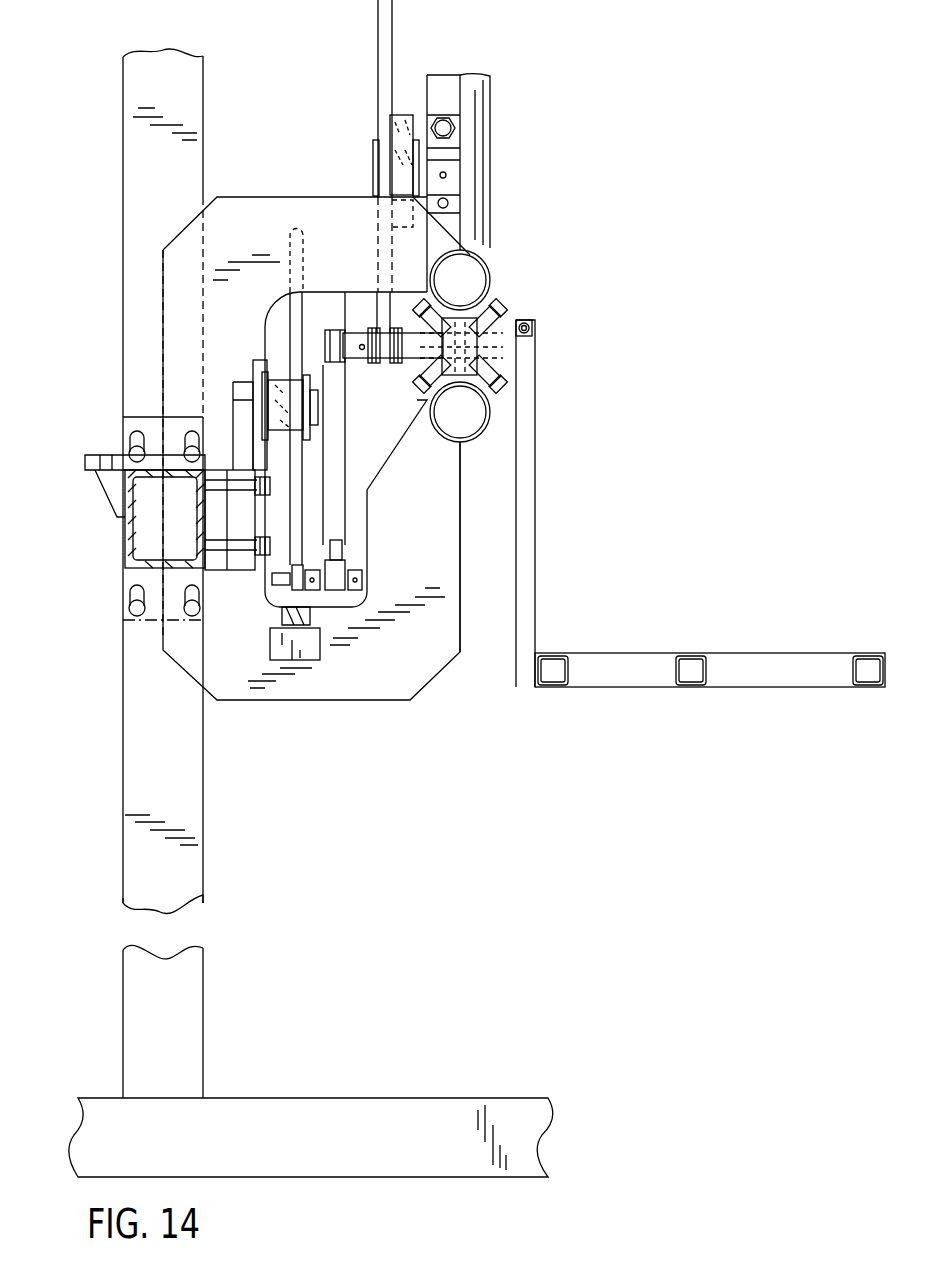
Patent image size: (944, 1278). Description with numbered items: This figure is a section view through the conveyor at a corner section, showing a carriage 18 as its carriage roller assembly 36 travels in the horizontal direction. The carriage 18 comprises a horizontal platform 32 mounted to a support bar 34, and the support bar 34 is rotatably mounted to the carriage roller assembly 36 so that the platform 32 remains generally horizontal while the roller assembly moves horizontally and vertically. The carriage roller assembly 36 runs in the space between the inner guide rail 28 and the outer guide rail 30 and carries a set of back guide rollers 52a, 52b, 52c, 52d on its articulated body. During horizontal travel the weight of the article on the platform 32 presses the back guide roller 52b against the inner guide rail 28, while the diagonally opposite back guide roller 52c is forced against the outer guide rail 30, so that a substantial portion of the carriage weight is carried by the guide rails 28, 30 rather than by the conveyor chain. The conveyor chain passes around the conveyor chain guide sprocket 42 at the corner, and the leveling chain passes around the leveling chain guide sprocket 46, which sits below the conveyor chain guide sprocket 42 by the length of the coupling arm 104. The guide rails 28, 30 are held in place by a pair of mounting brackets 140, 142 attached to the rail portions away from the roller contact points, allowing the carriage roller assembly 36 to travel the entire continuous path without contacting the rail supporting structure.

The carriage 18 is at (608, 530).
The inner guide rail 28 is at (485, 262).
The outer guide rail 30 is at (462, 445).
The horizontal platform 32 is at (640, 652).
The support bar 34 is at (528, 430).
The carriage roller assembly 36 is at (560, 322).
The conveyor chain guide sprocket 42 is at (393, 18).
The leveling chain guide sprocket 46 is at (297, 310).
The back guide roller 52a is at (488, 310).
The back guide roller 52b is at (425, 305).
The back guide roller 52c is at (510, 380).
The back guide roller 52d is at (420, 368).
The coupling arm 104 is at (358, 448).
The mounting bracket 140 is at (365, 698).
The mounting bracket 142 is at (233, 205).